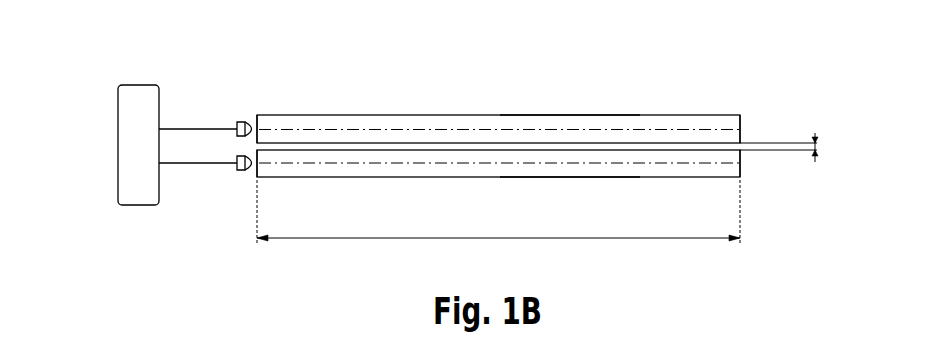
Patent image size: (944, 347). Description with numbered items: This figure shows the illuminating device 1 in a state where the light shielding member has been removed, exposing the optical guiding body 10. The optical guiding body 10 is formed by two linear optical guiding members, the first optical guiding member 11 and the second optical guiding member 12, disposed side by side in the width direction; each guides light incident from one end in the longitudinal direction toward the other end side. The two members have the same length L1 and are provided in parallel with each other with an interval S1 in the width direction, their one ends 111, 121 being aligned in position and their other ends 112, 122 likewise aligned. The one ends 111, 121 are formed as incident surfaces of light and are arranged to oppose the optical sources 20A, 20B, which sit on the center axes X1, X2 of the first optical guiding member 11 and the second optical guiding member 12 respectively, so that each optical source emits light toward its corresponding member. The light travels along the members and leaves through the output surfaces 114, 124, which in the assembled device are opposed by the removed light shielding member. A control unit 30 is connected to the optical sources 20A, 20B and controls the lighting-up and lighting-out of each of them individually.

The illuminating device 1 is at (747, 60).
The optical guiding body 10 is at (502, 60).
The first optical guiding member 11 is at (521, 103).
The second optical guiding member 12 is at (521, 150).
The optical source 20A is at (243, 121).
The optical source 20B is at (243, 171).
The control unit 30 is at (140, 85).
The one end 111 is at (257, 114).
The other end 112 is at (742, 116).
The output surface 114 is at (569, 115).
The one end 121 is at (257, 178).
The other end 122 is at (740, 178).
The output surface 124 is at (563, 177).
The center axis X1 is at (742, 129).
The center axis X2 is at (742, 163).
The interval S1 is at (796, 150).
The length L1 is at (498, 227).